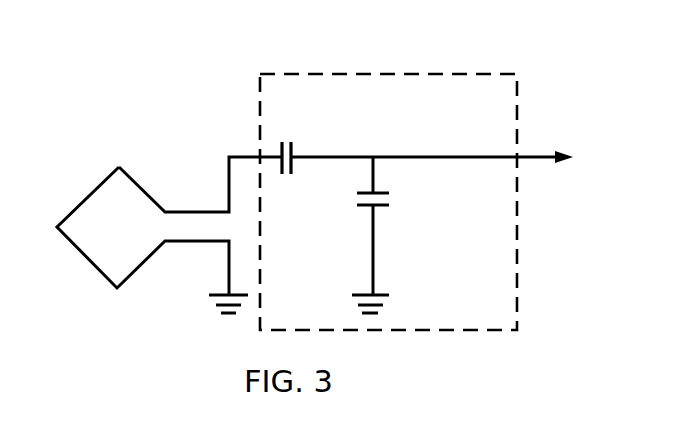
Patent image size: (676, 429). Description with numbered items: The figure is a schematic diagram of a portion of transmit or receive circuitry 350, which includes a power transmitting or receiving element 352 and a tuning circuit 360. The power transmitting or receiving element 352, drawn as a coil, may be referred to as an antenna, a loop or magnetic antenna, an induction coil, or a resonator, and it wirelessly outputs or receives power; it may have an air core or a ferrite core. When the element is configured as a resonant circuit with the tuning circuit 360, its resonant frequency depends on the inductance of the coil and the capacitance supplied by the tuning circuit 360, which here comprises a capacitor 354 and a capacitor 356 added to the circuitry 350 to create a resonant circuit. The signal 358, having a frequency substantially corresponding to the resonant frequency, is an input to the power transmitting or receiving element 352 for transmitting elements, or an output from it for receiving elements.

The transmit or receive circuitry 350 is at (137, 54).
The power transmitting or receiving element 352 is at (88, 196).
The capacitor 354 is at (292, 148).
The capacitor 356 is at (378, 207).
The signal 358 is at (410, 157).
The tuning circuit 360 is at (497, 74).